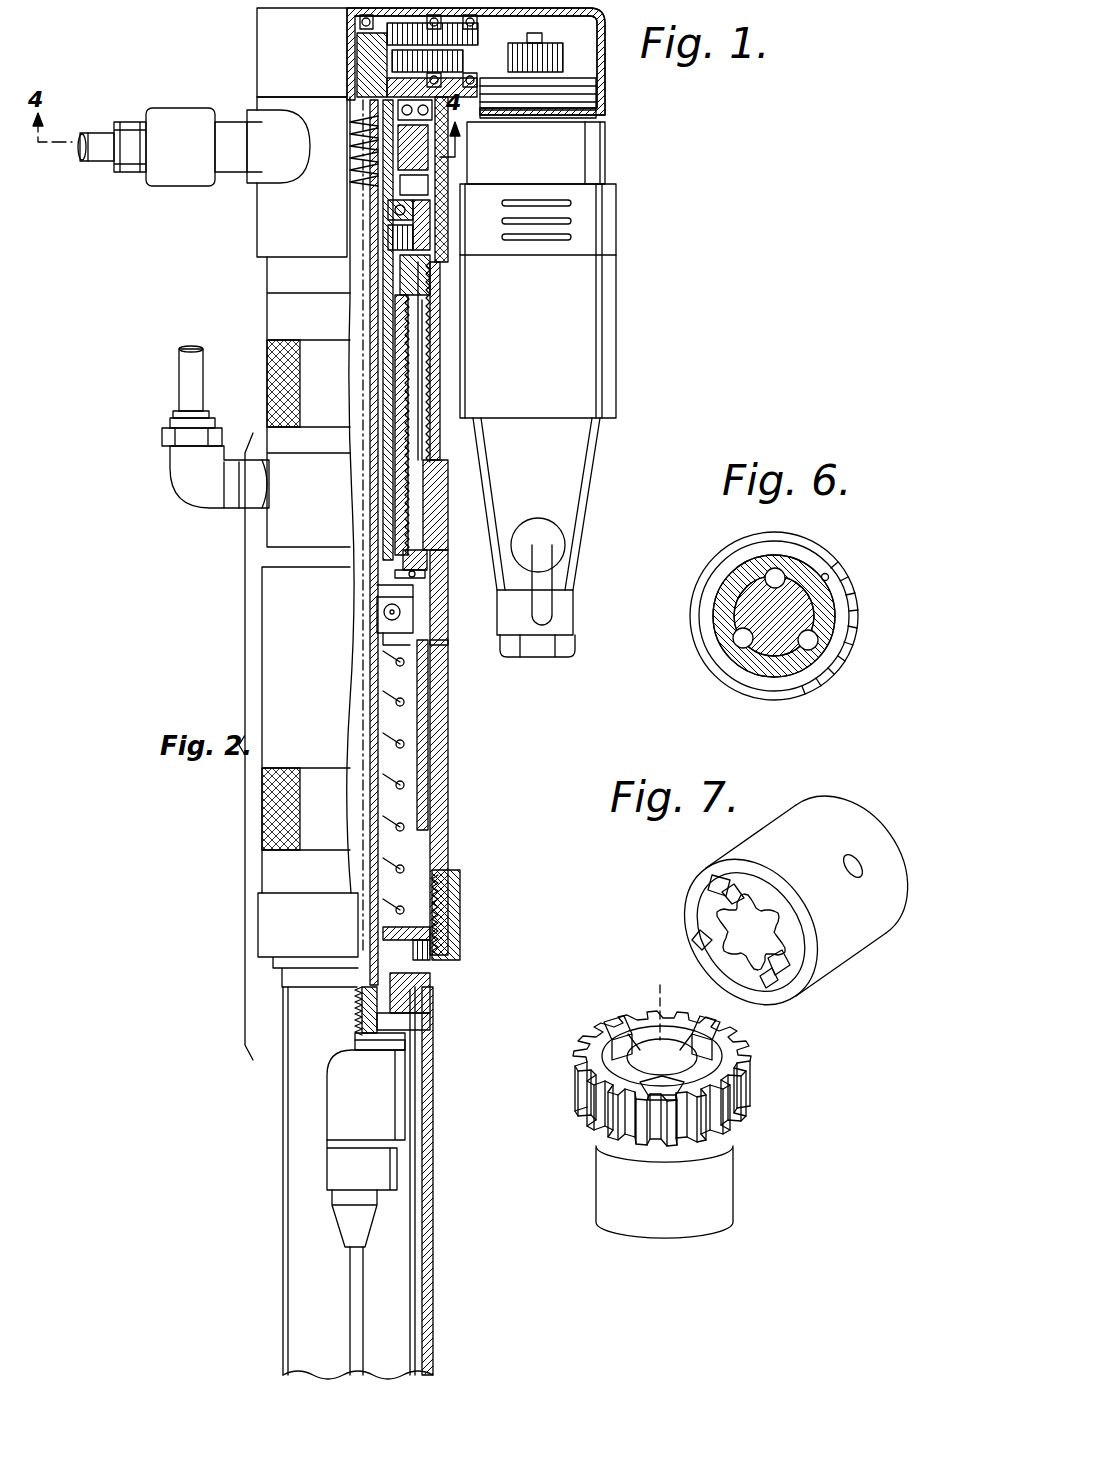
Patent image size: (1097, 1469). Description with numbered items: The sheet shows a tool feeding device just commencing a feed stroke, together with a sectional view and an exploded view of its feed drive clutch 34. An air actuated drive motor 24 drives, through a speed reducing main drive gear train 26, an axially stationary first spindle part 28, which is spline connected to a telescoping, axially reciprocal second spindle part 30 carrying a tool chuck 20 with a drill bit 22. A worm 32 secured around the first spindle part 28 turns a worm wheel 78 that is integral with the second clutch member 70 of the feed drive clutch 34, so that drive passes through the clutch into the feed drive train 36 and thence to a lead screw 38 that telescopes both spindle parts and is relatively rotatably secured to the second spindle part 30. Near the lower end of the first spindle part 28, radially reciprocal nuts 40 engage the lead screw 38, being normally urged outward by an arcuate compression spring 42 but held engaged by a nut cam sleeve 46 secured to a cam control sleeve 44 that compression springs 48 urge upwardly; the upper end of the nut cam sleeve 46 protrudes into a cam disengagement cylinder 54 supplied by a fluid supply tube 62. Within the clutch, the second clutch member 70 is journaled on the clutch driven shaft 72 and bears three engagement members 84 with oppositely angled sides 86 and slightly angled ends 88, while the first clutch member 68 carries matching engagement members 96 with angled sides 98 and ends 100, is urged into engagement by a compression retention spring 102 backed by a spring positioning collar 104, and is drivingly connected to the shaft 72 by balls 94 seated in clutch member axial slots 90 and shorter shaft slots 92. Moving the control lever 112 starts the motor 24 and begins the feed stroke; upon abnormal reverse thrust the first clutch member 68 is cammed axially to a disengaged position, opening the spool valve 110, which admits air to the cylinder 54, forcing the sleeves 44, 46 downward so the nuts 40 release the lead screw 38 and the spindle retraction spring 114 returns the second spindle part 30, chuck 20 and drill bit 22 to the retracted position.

In FIG. 1, the tool chuck 20 is at (338, 1113).
In FIG. 1, the drill bit 22 is at (353, 1317).
In FIG. 1, the drive motor 24 is at (590, 387).
In FIG. 1, the main drive gear train 26 is at (490, 38).
In FIG. 1, the first spindle part 28 is at (355, 292).
In FIG. 1, the second spindle part 30 is at (378, 848).
In FIG. 1, the worm 32 is at (350, 110).
In FIG. 1, the feed drive clutch 34 is at (256, 104).
In FIG. 6, the feed drive clutch 34 is at (846, 673).
In FIG. 7, the feed drive clutch 34 is at (782, 1049).
In FIG. 1, the feed drive train 36 is at (440, 157).
In FIG. 1, the lead screw 38 is at (405, 368).
In FIG. 1, the nuts 40 is at (428, 557).
In FIG. 1, the arcuate compression spring 42 is at (414, 574).
In FIG. 1, the cam control sleeve 44 is at (442, 740).
In FIG. 1, the nut cam sleeve 46 is at (430, 622).
In FIG. 1, the compression springs 48 is at (450, 885).
In FIG. 1, the cam disengagement cylinder 54 is at (450, 489).
In FIG. 1, the fluid supply tube 62 is at (90, 150).
In FIG. 6, the first clutch member 68 is at (740, 582).
In FIG. 7, the first clutch member 68 is at (842, 954).
In FIG. 7, the second clutch member 70 is at (733, 1174).
In FIG. 6, the clutch driven shaft 72 is at (818, 578).
In FIG. 7, the worm wheel 78 is at (576, 1099).
In FIG. 7, the engagement members 84 is at (616, 1025).
In FIG. 7, the angled sides 86 is at (629, 1023).
In FIG. 7, the ends 88 is at (615, 1039).
In FIG. 6, the clutch member axial slots 90 is at (740, 638).
In FIG. 6, the shaft slots 92 is at (757, 647).
In FIG. 6, the balls 94 is at (743, 650).
In FIG. 7, the engagement members 96 is at (715, 879).
In FIG. 7, the angled sides 98 is at (704, 934).
In FIG. 7, the ends 100 is at (698, 963).
In FIG. 6, the compression retention spring 102 is at (850, 597).
In FIG. 6, the spring positioning collar 104 is at (857, 640).
In FIG. 1, the spool valve 110 is at (162, 112).
In FIG. 1, the control lever 112 is at (548, 600).
In FIG. 1, the spindle retraction spring 114 is at (397, 705).